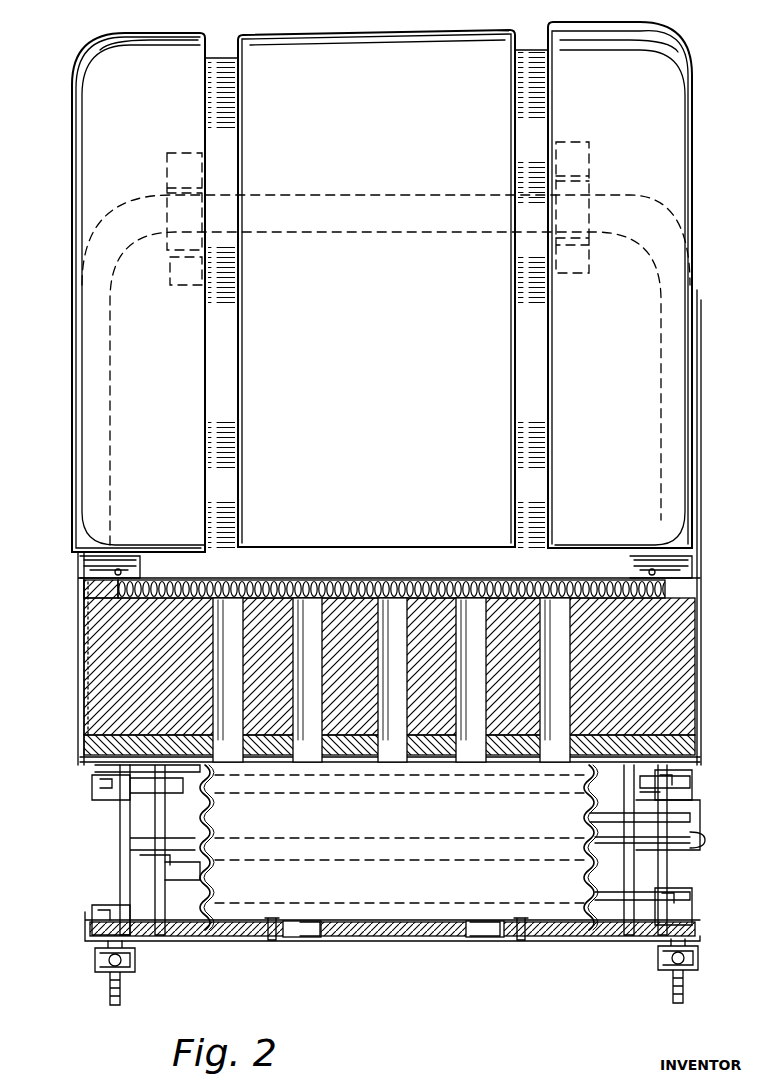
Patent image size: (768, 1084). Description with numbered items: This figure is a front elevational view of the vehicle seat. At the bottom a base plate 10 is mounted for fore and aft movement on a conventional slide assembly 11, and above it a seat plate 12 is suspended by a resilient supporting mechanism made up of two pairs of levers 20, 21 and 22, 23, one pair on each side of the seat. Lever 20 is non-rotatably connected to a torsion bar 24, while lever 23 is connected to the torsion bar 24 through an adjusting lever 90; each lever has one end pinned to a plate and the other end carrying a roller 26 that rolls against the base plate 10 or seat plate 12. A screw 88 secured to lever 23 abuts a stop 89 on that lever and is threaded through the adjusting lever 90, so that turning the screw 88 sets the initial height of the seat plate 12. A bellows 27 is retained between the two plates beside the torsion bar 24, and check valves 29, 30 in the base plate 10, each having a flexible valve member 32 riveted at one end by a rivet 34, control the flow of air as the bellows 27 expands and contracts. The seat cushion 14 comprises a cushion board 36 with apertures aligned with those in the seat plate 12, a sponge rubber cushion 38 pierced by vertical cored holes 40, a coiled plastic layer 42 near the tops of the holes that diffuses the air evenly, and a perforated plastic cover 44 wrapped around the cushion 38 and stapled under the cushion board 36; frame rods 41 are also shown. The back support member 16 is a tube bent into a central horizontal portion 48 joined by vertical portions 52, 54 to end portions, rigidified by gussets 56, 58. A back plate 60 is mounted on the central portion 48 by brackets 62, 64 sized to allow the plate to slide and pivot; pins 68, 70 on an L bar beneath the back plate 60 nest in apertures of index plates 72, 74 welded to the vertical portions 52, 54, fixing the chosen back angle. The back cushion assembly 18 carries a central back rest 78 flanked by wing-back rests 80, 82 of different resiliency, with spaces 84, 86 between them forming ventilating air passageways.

The base plate 10 is at (270, 940).
The slide assembly 11 is at (132, 975).
The seat plate 12 is at (366, 760).
The seat cushion 14 is at (752, 662).
The back support member 16 is at (305, 228).
The back cushion assembly 18 is at (376, 277).
The lever 20 is at (126, 825).
The lever 21 is at (160, 874).
The lever 22 is at (630, 815).
The lever 23 is at (662, 876).
The torsion bar 24 is at (190, 867).
The roller 26 is at (137, 806).
The bellows 27 is at (212, 815).
The check valve 29 is at (315, 940).
The check valve 30 is at (472, 936).
The flexible valve member 32 is at (302, 920).
The rivet 34 is at (274, 918).
The cushion board 36 is at (82, 762).
The cushion 38 is at (104, 699).
The cored holes 40 is at (232, 760).
The frame rods 41 is at (400, 839).
The coiled plastic layer 42 is at (86, 628).
The perforated plastic cover 44 is at (320, 578).
The central horizontal portion 48 is at (432, 192).
The vertical portion 52 is at (110, 415).
The vertical portion 54 is at (660, 380).
The gusset 56 is at (72, 410).
The gusset 58 is at (700, 405).
The back plate 60 is at (228, 500).
The bracket 62 is at (176, 152).
The bracket 64 is at (589, 150).
The pin 68 is at (96, 573).
The pin 70 is at (665, 565).
The index plate 72 is at (84, 560).
The index plate 74 is at (618, 560).
The central back rest 78 is at (364, 368).
The wing-back rest 80 is at (172, 361).
The wing-back rest 82 is at (618, 328).
The space 84 is at (226, 47).
The space 86 is at (532, 42).
The screw 88 is at (702, 838).
The stop 89 is at (672, 781).
The adjusting lever 90 is at (684, 818).